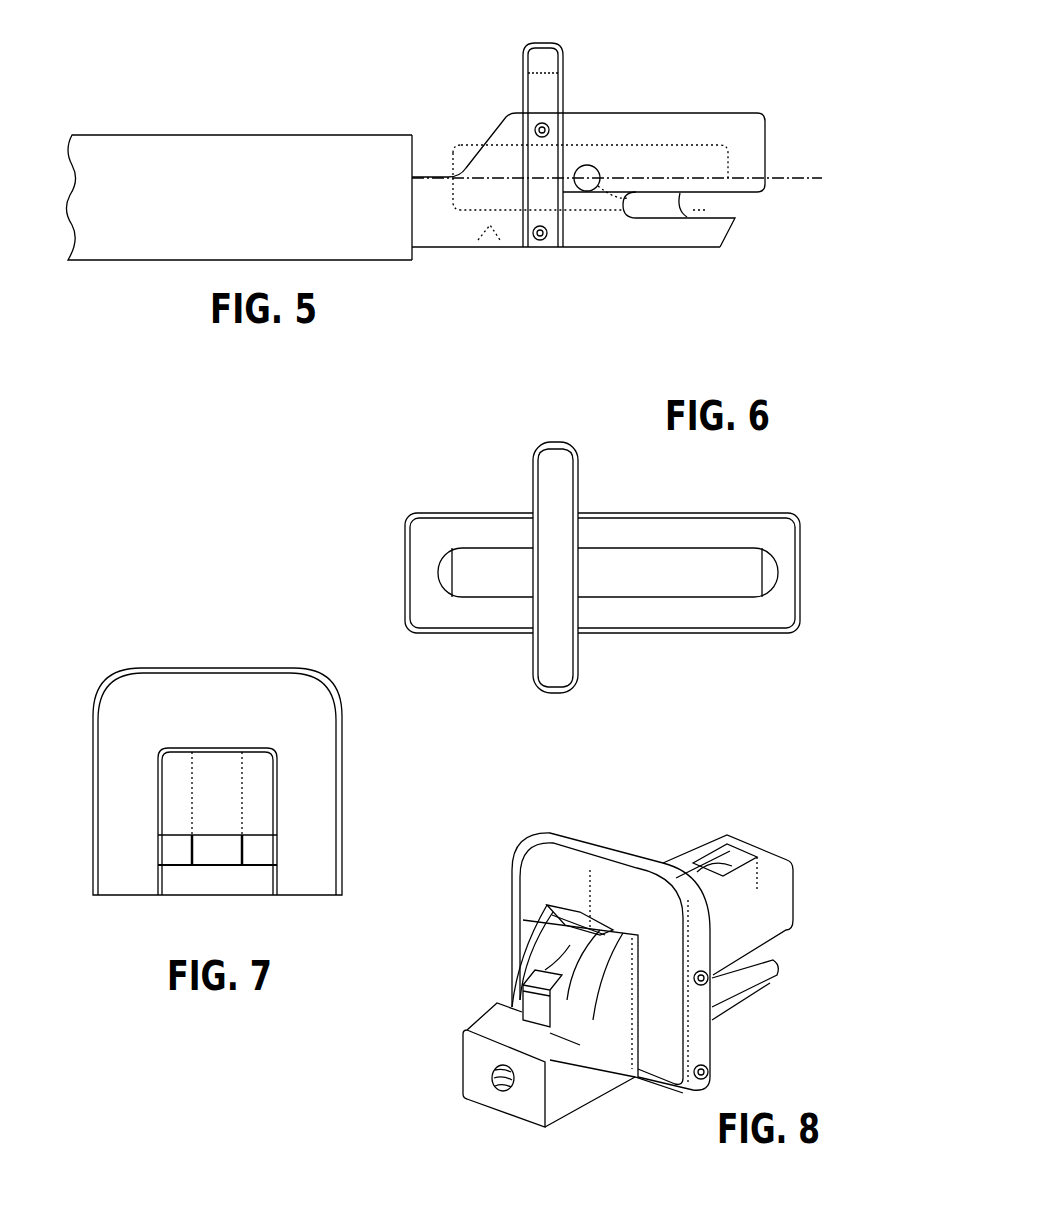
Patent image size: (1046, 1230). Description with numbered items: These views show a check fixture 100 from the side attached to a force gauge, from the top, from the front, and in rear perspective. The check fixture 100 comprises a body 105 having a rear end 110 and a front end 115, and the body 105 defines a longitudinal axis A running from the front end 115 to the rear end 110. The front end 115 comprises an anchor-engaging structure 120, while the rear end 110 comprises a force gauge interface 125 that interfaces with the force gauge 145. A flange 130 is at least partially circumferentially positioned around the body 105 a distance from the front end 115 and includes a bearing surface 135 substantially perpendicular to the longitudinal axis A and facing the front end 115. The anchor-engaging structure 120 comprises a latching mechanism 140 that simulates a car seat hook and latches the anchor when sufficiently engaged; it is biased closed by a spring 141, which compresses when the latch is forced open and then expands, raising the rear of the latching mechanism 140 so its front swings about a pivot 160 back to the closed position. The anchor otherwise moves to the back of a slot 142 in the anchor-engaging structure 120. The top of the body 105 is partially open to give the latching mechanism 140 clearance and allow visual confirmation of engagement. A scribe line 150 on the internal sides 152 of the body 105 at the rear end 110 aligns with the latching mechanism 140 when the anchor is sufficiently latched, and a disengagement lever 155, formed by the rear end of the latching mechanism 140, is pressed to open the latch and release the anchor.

In FIG. 5, the check fixture 100 is at (653, 50).
In FIG. 6, the check fixture 100 is at (449, 476).
In FIG. 7, the check fixture 100 is at (137, 638).
In FIG. 8, the check fixture 100 is at (766, 836).
In FIG. 5, the body 105 is at (610, 127).
In FIG. 6, the body 105 is at (662, 527).
In FIG. 7, the body 105 is at (253, 792).
In FIG. 8, the body 105 is at (700, 852).
In FIG. 5, the rear end 110 is at (426, 156).
In FIG. 6, the rear end 110 is at (406, 568).
In FIG. 8, the rear end 110 is at (480, 1027).
In FIG. 5, the front end 115 is at (701, 101).
In FIG. 6, the front end 115 is at (801, 565).
In FIG. 7, the front end 115 is at (182, 773).
In FIG. 8, the front end 115 is at (797, 888).
In FIG. 5, the anchor-engaging structure 120 is at (747, 153).
In FIG. 6, the anchor-engaging structure 120 is at (735, 513).
In FIG. 7, the anchor-engaging structure 120 is at (183, 880).
In FIG. 8, the anchor-engaging structure 120 is at (772, 905).
In FIG. 5, the force gauge interface 125 is at (412, 228).
In FIG. 8, the force gauge interface 125 is at (492, 1082).
In FIG. 5, the flange 130 is at (541, 67).
In FIG. 6, the flange 130 is at (553, 447).
In FIG. 7, the flange 130 is at (205, 690).
In FIG. 5, the bearing surface 135 is at (566, 70).
In FIG. 5, the latching mechanism 140 is at (710, 198).
In FIG. 6, the latching mechanism 140 is at (630, 580).
In FIG. 7, the latching mechanism 140 is at (217, 847).
In FIG. 8, the latching mechanism 140 is at (560, 1003).
In FIG. 5, the spring 141 is at (484, 242).
In FIG. 5, the slot 142 is at (657, 201).
In FIG. 7, the slot 142 is at (253, 857).
In FIG. 5, the force gauge 145 is at (347, 130).
In FIG. 8, the scribe line 150 is at (547, 973).
In FIG. 8, the internal sides 152 is at (577, 933).
In FIG. 8, the disengagement lever 155 is at (545, 970).
In FIG. 5, the pivot 160 is at (587, 184).
In FIG. 5, the longitudinal axis A is at (788, 178).